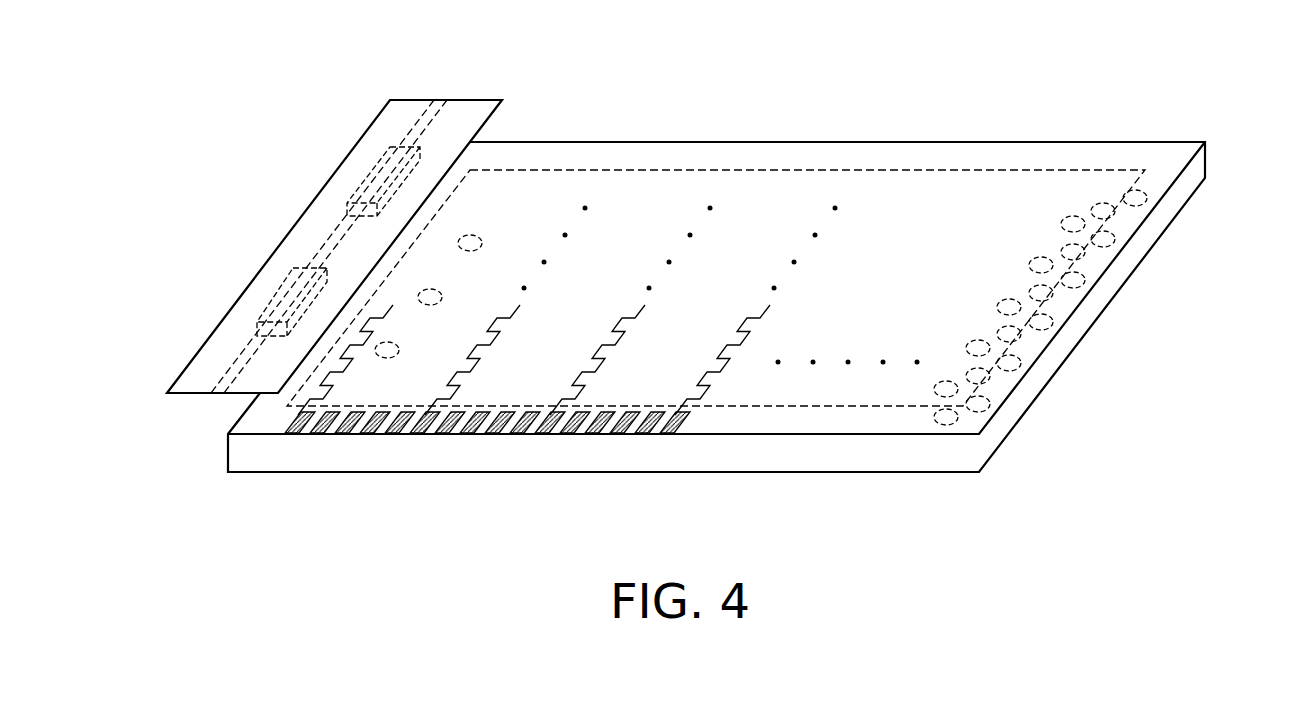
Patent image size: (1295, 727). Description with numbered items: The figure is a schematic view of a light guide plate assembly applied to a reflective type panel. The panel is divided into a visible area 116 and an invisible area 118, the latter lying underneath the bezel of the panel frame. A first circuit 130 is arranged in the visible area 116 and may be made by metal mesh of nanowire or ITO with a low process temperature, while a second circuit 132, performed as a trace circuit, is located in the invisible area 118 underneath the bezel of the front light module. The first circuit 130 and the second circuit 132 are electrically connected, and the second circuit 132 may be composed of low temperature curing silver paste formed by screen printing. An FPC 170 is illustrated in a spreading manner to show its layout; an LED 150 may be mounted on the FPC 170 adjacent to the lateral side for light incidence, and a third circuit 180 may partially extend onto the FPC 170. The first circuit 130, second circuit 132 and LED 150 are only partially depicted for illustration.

The visible area 116 is at (1146, 173).
The invisible area 118 is at (605, 158).
The first circuit 130 is at (703, 392).
The second circuit 132 is at (593, 430).
The LED 150 is at (373, 182).
The FPC 170 is at (317, 243).
The third circuit 180 is at (415, 137).